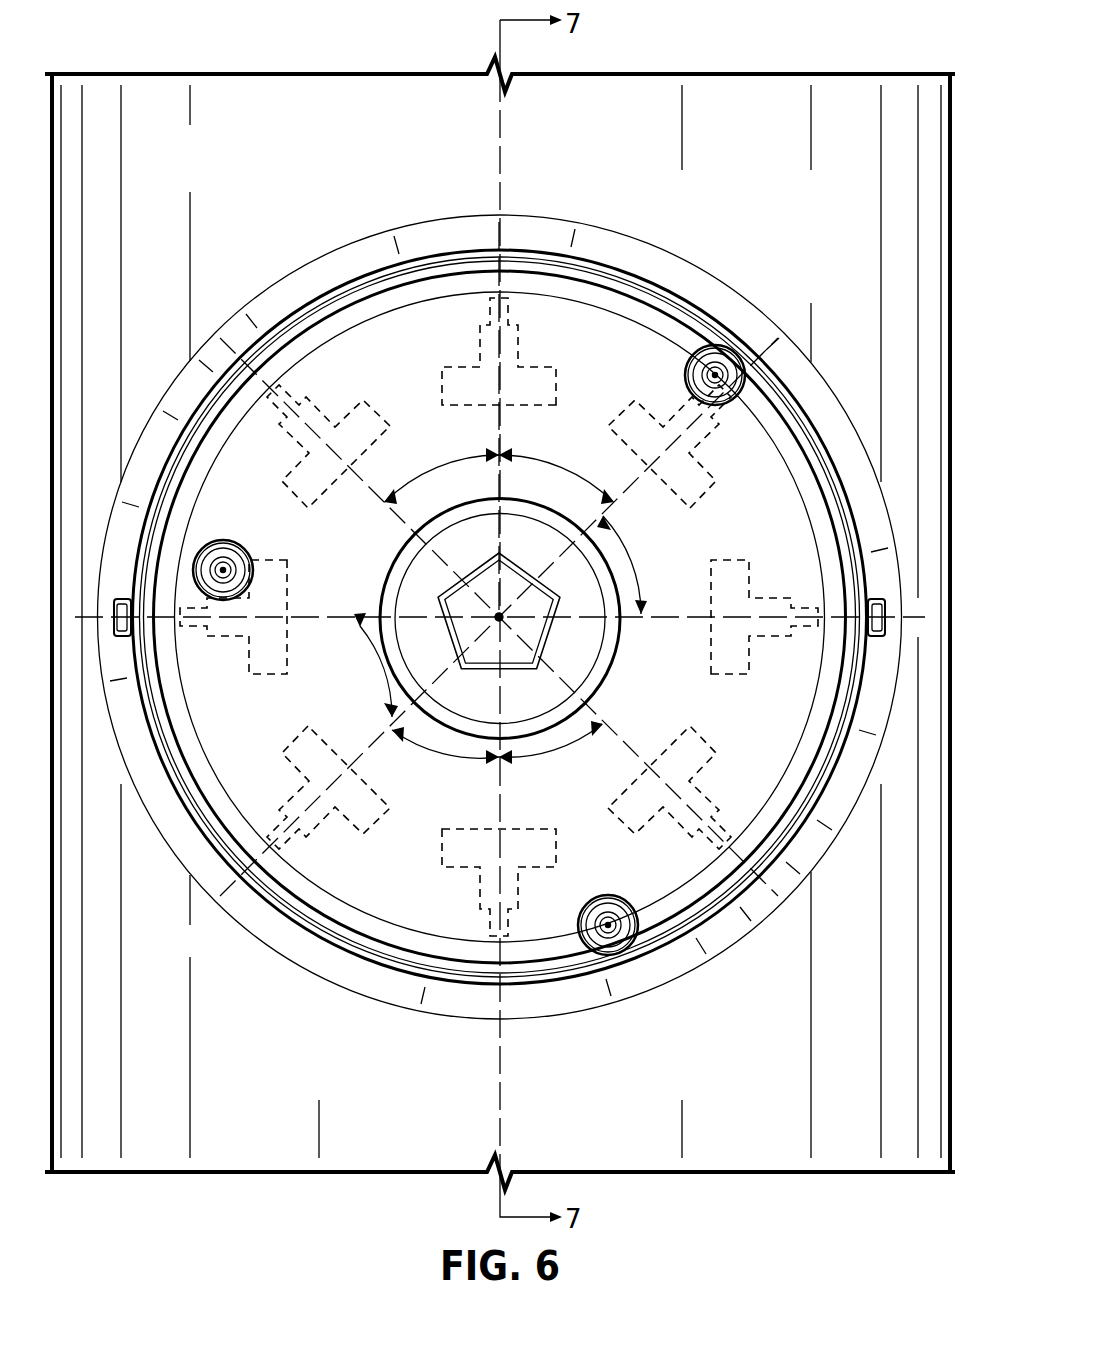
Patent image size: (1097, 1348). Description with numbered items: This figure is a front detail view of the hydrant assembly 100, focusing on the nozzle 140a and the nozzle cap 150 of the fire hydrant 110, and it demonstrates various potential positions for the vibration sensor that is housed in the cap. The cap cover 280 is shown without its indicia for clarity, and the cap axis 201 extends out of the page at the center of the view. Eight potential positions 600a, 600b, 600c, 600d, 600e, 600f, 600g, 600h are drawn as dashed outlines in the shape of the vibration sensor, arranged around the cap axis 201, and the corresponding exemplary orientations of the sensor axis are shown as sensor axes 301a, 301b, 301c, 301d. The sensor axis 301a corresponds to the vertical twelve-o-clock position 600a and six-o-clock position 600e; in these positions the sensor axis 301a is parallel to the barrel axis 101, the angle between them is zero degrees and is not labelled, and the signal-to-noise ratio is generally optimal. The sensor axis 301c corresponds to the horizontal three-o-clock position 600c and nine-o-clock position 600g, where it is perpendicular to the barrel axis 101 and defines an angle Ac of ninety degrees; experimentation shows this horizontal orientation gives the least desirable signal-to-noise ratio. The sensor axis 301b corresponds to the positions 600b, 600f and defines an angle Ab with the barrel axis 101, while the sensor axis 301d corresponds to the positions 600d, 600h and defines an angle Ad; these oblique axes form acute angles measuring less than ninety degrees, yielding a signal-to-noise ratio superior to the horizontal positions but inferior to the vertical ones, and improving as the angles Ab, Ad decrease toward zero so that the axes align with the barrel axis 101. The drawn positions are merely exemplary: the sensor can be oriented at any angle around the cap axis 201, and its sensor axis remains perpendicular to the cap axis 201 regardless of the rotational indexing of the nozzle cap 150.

The hydrant assembly 100 is at (208, 118).
The barrel axis 101 is at (501, 196).
The fire hydrant 110 is at (795, 262).
The nozzle 140a is at (158, 418).
The nozzle cap 150 is at (672, 296).
The cap cover 280 is at (345, 320).
The cap axis 201 is at (499, 617).
The sensor axis 301a is at (503, 433).
The sensor axis 301b is at (627, 487).
The sensor axis 301c is at (676, 652).
The sensor axis 301d is at (655, 733).
The twelve-o-clock position 600a is at (538, 382).
The position 600b is at (702, 478).
The three-o-clock position 600c is at (736, 565).
The position 600d is at (712, 748).
The six-o-clock position 600e is at (552, 852).
The position 600f is at (366, 816).
The nine-o-clock position 600g is at (253, 676).
The position 600h is at (300, 478).
The angle Ad is at (493, 606).
The angle Ab is at (503, 619).
The angle Ac is at (500, 616).